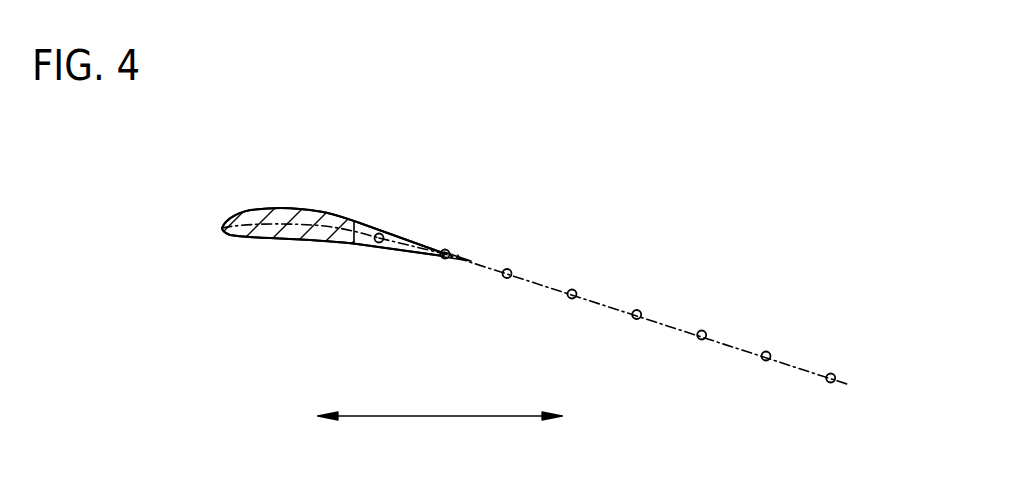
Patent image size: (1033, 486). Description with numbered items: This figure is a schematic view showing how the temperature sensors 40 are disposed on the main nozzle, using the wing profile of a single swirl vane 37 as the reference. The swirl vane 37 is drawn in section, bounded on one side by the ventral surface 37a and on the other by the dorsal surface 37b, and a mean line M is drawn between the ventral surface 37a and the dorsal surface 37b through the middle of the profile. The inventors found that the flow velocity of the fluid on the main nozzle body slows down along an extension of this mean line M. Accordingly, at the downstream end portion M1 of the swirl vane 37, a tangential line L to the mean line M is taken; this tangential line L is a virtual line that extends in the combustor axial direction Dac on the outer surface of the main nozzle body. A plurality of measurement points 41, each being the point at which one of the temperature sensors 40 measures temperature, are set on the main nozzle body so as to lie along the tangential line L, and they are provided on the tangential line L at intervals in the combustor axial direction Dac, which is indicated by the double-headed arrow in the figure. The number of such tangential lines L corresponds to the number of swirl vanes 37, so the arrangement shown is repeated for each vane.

The swirl vane 37 is at (333, 242).
The ventral surface 37a is at (318, 240).
The dorsal surface 37b is at (347, 218).
The temperature sensor 40 is at (605, 251).
The measurement point 41 is at (702, 330).
The mean line M is at (278, 229).
The downstream end portion M1 is at (469, 263).
The tangential line L is at (786, 362).
The combustor axial direction Dac is at (440, 433).